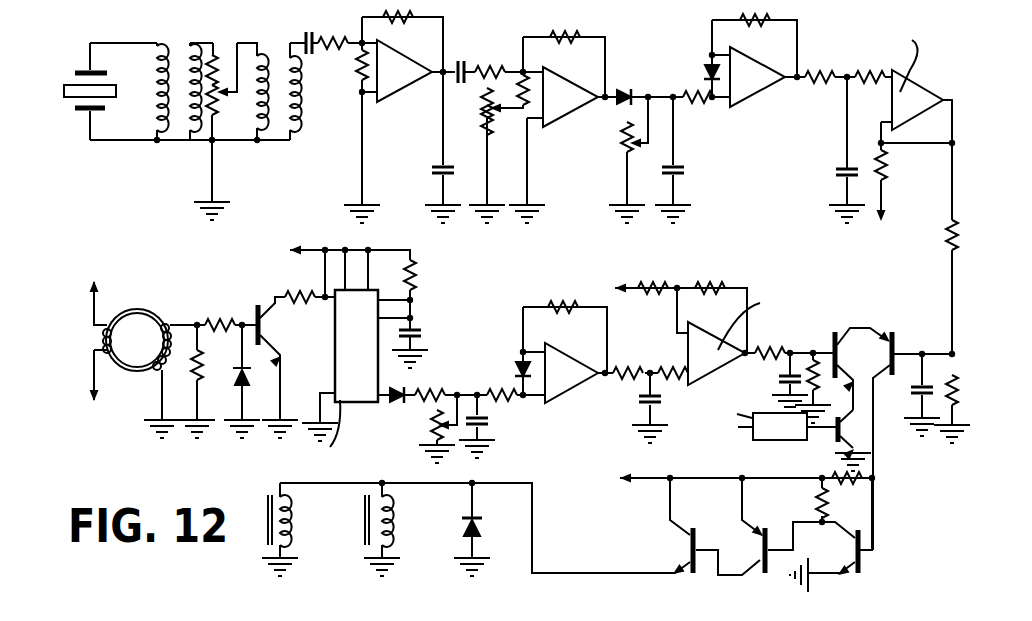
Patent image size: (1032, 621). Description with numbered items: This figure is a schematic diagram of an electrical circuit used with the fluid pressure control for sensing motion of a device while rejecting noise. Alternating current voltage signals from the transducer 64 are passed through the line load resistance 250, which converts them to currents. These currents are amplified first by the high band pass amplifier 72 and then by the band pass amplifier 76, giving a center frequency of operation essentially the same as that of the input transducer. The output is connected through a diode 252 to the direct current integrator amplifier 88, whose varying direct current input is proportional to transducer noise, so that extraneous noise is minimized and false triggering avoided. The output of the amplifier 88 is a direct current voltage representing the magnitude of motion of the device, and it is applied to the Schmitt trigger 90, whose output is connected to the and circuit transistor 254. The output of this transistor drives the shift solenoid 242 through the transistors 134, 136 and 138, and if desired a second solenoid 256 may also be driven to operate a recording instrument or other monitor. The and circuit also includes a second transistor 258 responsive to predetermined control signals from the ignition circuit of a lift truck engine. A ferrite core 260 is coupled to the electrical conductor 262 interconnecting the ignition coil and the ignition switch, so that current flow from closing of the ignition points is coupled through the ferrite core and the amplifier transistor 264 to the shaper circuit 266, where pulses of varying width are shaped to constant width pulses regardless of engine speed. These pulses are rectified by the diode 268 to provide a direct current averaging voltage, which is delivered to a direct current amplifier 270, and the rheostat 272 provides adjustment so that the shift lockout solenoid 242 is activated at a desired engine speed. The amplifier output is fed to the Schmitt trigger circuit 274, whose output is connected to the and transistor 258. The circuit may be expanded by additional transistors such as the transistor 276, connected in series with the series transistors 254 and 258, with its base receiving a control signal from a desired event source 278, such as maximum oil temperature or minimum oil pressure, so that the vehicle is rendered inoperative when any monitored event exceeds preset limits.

The transducer 64 is at (75, 86).
The line load resistance 250 is at (340, 38).
The high band pass amplifier 72 is at (397, 93).
The band pass amplifier 76 is at (566, 113).
The diode 252 is at (622, 91).
The direct current integrator amplifier 88 is at (765, 80).
The Schmitt trigger 90 is at (920, 96).
The electrical conductor 262 is at (92, 302).
The ferrite core 260 is at (147, 311).
The amplifier transistor 264 is at (255, 308).
The shaper circuit 266 is at (352, 390).
The diode 268 is at (409, 393).
The rheostat 272 is at (435, 430).
The amplifier 270 is at (575, 387).
The Schmitt trigger circuit 274 is at (713, 368).
The second transistor 258 is at (835, 345).
The and circuit transistor 254 is at (893, 345).
The transistor 276 is at (846, 439).
The event source 278 is at (771, 435).
The second solenoid 256 is at (287, 515).
The shift solenoid 242 is at (390, 535).
The transistor 138 is at (712, 524).
The transistor 136 is at (771, 537).
The transistor 134 is at (862, 566).